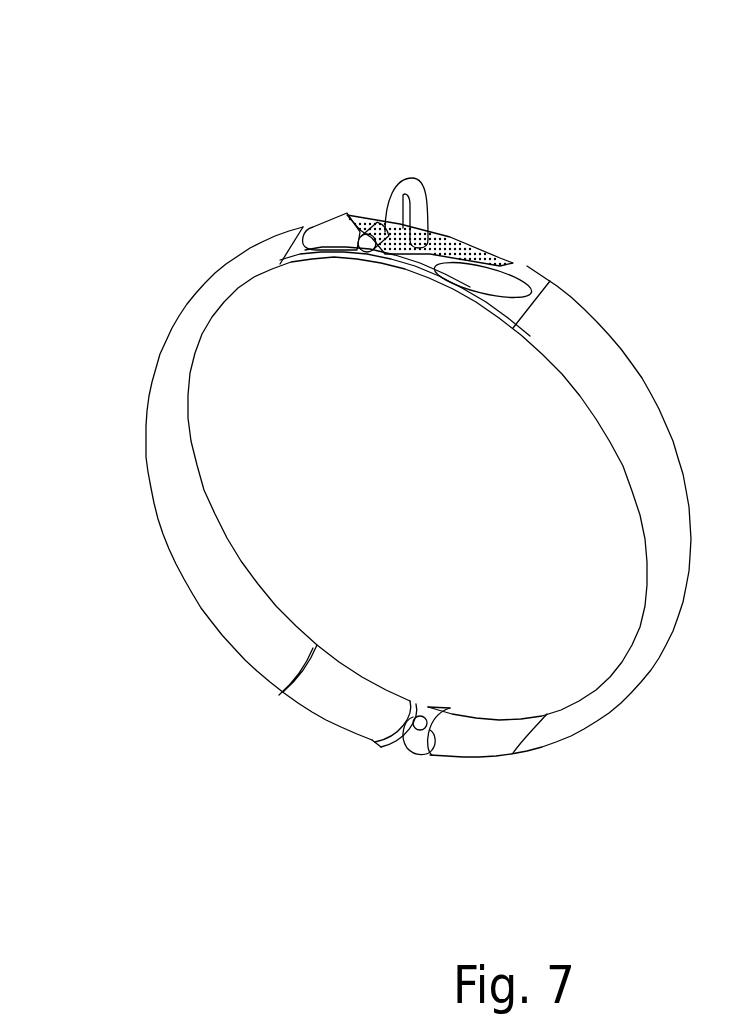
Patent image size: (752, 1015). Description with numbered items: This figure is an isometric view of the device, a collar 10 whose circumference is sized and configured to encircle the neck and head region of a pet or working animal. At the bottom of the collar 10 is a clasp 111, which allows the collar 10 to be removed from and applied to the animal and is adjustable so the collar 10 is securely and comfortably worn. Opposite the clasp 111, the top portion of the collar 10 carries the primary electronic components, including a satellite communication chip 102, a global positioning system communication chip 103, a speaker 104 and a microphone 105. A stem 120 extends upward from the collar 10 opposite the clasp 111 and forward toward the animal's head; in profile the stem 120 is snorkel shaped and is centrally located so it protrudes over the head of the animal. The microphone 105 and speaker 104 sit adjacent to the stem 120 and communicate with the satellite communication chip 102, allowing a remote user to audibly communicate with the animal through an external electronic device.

The collar 10 is at (361, 383).
The satellite communication chip 102 is at (328, 233).
The global positioning system (GPS) communication chip 103 is at (515, 273).
The speaker 104 is at (369, 222).
The microphone 105 is at (467, 233).
The clasp 111 is at (412, 742).
The stem 120 is at (423, 177).